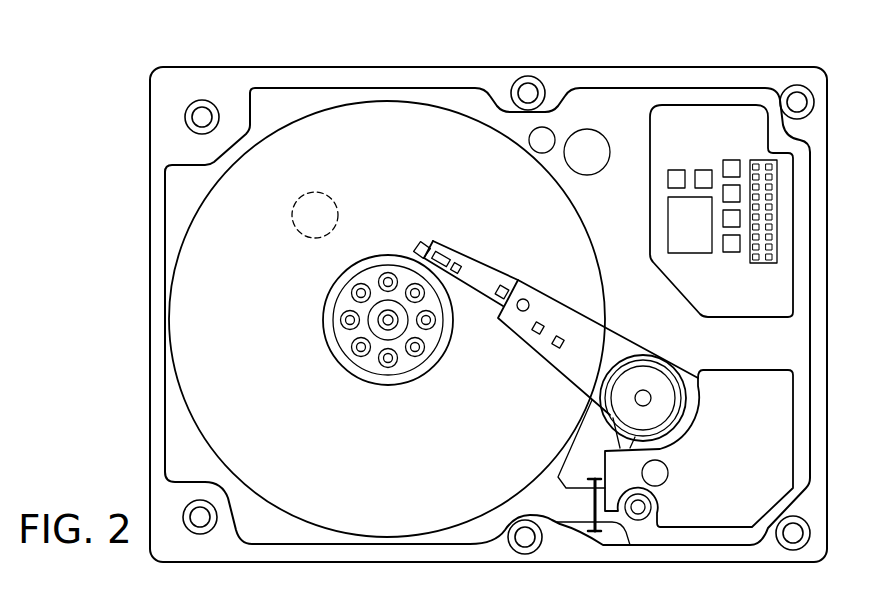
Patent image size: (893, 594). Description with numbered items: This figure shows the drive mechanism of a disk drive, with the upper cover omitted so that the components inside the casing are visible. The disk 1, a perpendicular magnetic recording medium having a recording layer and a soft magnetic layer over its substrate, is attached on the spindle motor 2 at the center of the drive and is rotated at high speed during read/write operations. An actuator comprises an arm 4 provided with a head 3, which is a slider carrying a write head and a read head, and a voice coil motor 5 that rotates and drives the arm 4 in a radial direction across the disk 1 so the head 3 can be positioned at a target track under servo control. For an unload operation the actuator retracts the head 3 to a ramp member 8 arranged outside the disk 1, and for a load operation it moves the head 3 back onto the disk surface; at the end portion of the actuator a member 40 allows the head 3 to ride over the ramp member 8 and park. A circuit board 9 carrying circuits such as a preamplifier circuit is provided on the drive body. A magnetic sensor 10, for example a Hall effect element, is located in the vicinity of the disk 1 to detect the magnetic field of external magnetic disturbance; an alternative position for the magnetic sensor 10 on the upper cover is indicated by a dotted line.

The disk 1 is at (383, 117).
The spindle motor 2 is at (386, 322).
The head 3 is at (440, 236).
The member 40 is at (418, 241).
The arm 4 is at (540, 295).
The voice coil motor 5 is at (738, 384).
The ramp member 8 is at (553, 132).
The circuit board 9 is at (718, 117).
The magnetic sensor 10 is at (315, 192).